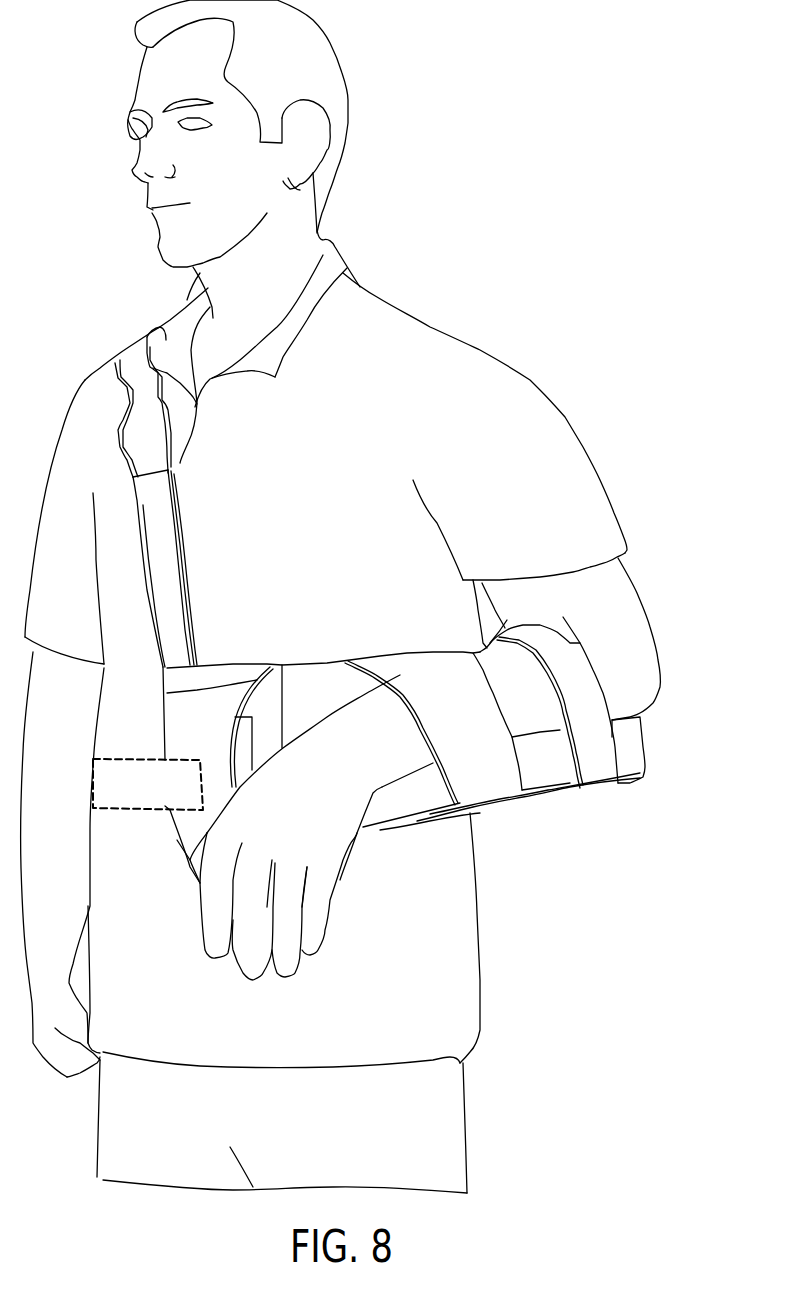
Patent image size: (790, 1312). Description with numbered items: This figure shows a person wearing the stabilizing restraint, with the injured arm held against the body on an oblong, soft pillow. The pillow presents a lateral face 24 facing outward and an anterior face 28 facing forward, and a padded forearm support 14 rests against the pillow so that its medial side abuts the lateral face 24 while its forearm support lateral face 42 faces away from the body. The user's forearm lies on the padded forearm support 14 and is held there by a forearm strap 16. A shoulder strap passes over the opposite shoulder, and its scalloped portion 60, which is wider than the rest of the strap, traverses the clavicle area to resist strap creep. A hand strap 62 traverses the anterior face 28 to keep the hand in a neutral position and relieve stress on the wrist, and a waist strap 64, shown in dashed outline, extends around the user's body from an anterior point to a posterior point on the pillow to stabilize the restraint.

The padded forearm support 14 is at (658, 773).
The forearm strap 16 is at (592, 767).
The lateral face 24 is at (315, 701).
The anterior face 28 is at (268, 675).
The forearm support lateral face 42 is at (627, 747).
The scalloped portion 60 is at (133, 347).
The hand strap 62 is at (200, 732).
The waist strap 64 is at (157, 800).